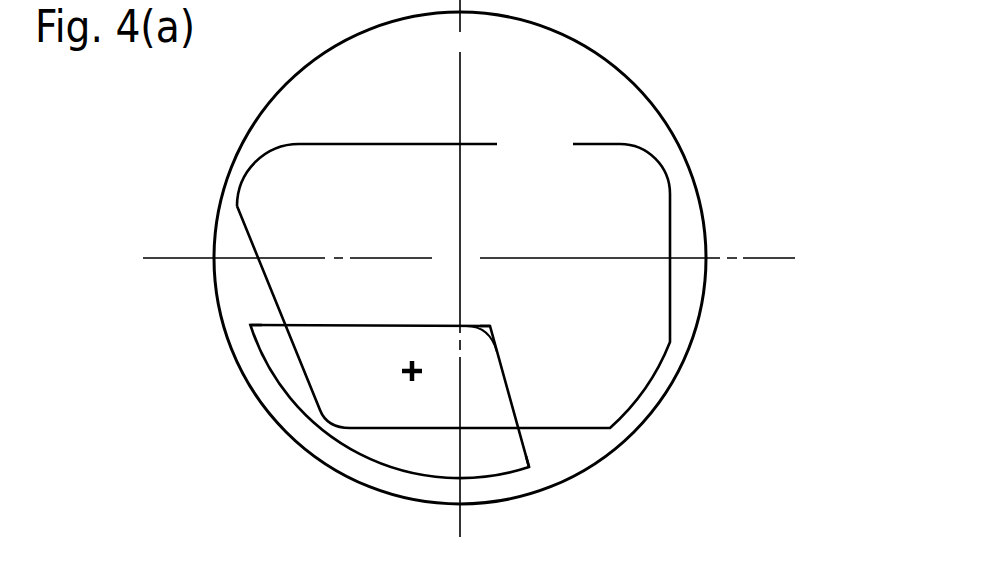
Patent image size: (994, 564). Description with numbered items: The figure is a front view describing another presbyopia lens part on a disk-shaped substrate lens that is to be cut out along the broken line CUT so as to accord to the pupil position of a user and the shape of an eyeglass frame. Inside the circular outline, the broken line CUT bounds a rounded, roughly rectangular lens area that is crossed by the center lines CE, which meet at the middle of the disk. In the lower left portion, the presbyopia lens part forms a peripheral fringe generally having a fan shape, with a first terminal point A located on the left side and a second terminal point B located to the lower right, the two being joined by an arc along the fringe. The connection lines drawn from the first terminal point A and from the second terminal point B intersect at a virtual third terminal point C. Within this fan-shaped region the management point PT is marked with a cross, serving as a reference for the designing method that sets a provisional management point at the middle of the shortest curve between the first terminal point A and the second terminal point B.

The broken line CUT is at (453, 275).
The center axes of the wafer CE is at (469, 268).
The measurement point / region PT is at (389, 401).
The first terminal point A is at (247, 311).
The second terminal point B is at (538, 468).
The third terminal point C is at (494, 310).